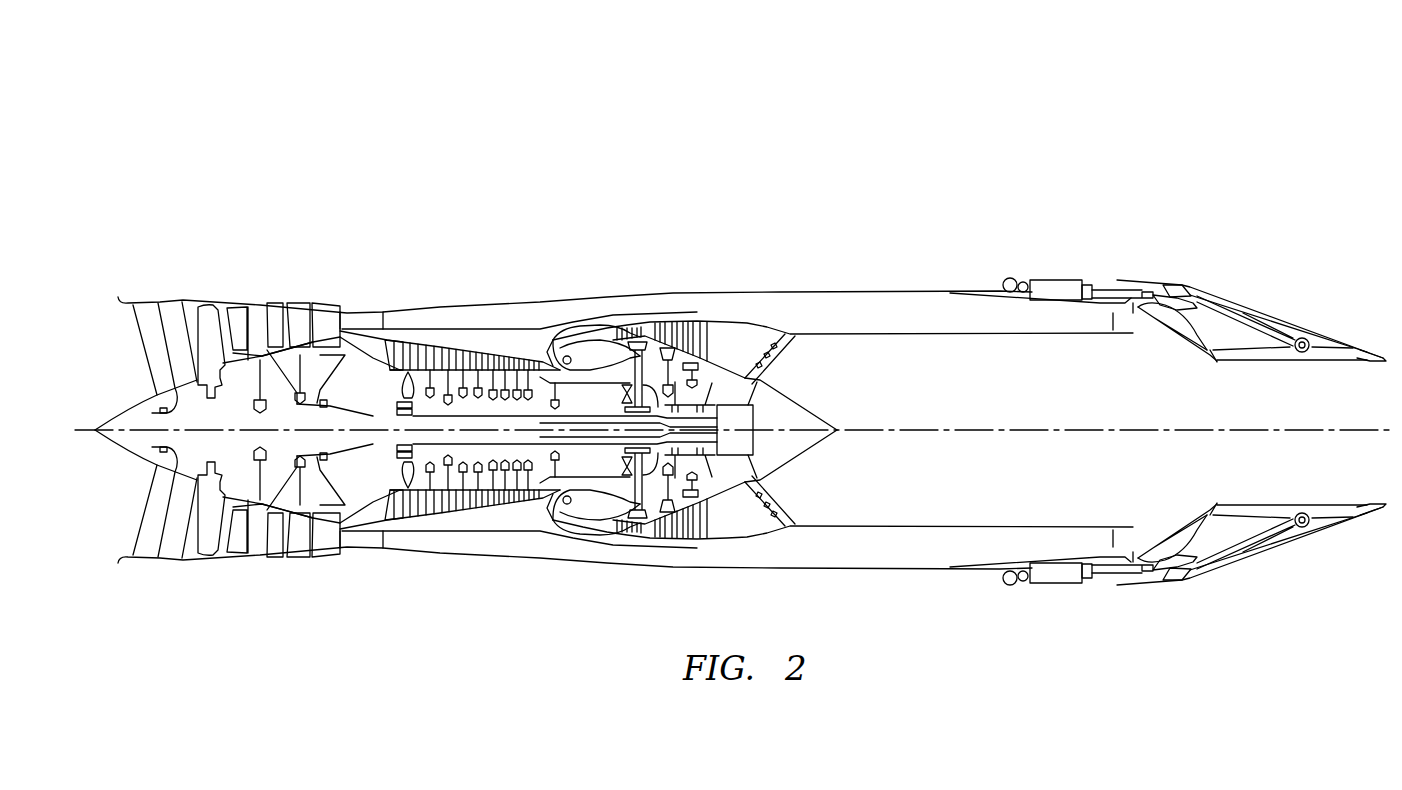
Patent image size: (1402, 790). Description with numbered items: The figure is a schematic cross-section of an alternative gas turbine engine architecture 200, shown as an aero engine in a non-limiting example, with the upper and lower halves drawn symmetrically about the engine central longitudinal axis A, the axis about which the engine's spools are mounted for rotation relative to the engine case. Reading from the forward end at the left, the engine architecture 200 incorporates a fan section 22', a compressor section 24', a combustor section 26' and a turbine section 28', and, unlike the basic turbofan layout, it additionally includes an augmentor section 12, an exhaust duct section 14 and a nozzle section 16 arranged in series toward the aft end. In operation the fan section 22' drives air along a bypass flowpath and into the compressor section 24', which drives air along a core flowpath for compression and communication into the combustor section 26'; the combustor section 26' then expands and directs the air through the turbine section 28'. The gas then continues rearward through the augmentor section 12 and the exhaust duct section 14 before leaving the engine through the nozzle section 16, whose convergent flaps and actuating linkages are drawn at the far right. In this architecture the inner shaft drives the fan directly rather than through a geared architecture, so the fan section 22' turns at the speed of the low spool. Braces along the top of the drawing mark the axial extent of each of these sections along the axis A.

The alternative engine architecture 200 is at (905, 122).
The fan section 22' is at (230, 365).
The compressor section 24' is at (473, 360).
The combustor section 26' is at (593, 354).
The turbine section 28' is at (679, 355).
The augmentor section 12 is at (713, 232).
The exhaust duct section 14 is at (1125, 232).
The nozzle section 16 is at (1382, 232).
The engine central longitudinal axis A is at (1300, 432).